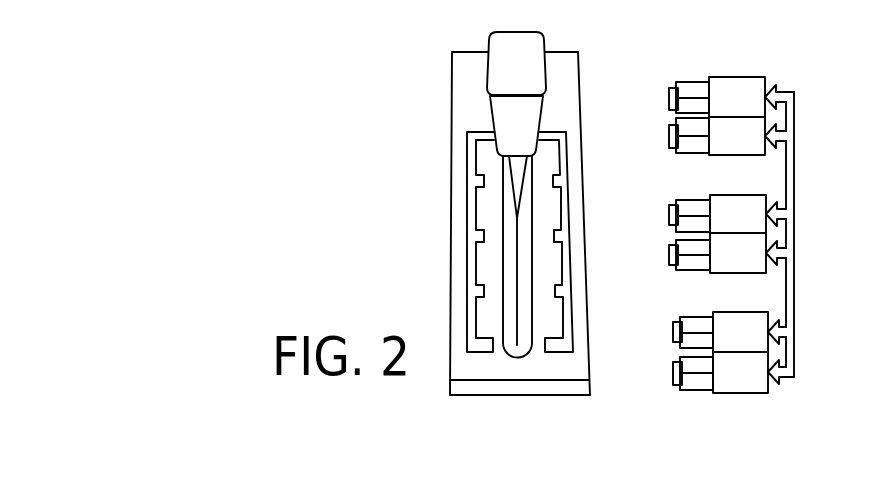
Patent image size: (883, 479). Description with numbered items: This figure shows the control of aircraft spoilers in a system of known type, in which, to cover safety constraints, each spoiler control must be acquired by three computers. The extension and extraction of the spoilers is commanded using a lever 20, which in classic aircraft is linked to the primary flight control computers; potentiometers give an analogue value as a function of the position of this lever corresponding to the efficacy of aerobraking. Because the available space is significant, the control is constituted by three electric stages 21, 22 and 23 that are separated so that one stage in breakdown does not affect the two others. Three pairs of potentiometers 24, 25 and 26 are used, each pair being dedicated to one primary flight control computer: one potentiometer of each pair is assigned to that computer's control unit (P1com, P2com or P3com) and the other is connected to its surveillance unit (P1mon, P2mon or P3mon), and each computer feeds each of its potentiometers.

The lever 20 is at (518, 43).
The electric stage 21 is at (810, 72).
The electric stage 22 is at (811, 190).
The electric stage 23 is at (812, 307).
The pair of potentiometers 24 is at (671, 131).
The pair of potentiometers 25 is at (671, 248).
The pair of potentiometers 26 is at (674, 365).